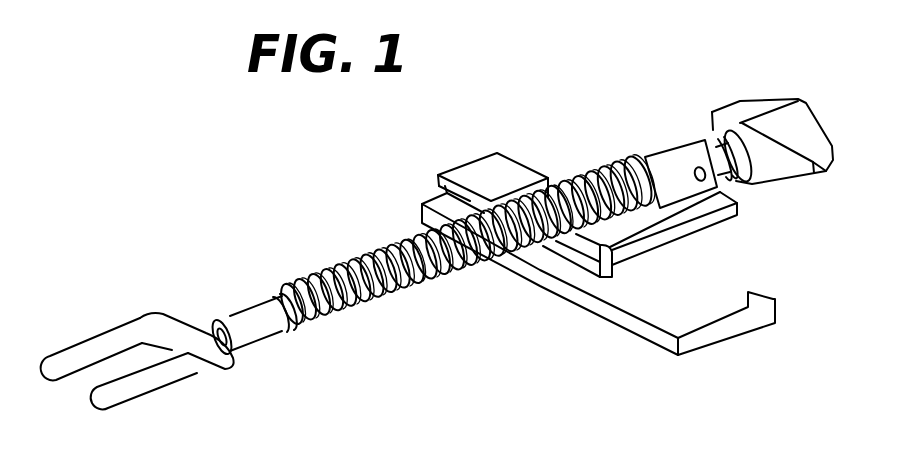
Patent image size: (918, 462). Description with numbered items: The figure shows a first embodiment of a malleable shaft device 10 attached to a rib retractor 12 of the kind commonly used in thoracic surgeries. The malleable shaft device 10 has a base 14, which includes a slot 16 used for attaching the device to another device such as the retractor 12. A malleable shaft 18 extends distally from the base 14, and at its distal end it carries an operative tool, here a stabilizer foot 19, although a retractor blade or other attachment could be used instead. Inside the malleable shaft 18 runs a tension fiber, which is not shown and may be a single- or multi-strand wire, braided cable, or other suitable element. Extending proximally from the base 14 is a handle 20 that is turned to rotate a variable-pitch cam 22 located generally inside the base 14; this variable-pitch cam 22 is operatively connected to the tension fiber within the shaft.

The malleable shaft device 10 is at (179, 184).
The rib retractor 12 is at (484, 172).
The base 14 is at (738, 206).
The slot 16 is at (650, 250).
The malleable shaft 18 is at (342, 272).
The stabilizer foot 19 is at (99, 338).
The handle 20 is at (818, 116).
The variable-pitch cam 22 is at (660, 150).